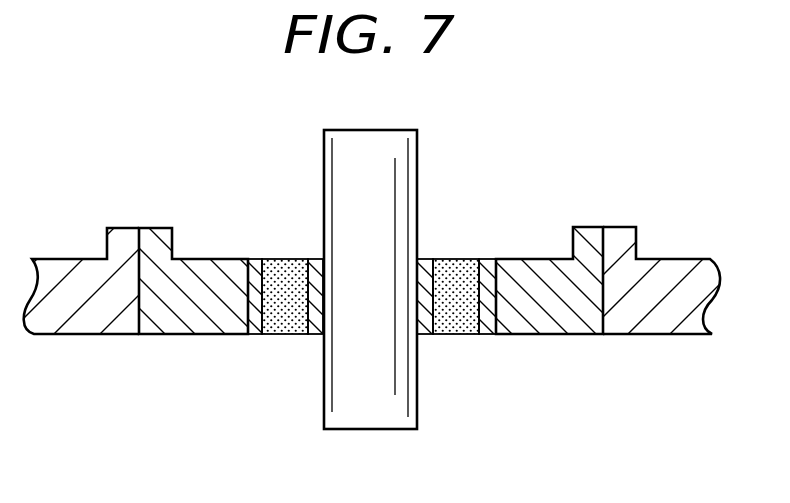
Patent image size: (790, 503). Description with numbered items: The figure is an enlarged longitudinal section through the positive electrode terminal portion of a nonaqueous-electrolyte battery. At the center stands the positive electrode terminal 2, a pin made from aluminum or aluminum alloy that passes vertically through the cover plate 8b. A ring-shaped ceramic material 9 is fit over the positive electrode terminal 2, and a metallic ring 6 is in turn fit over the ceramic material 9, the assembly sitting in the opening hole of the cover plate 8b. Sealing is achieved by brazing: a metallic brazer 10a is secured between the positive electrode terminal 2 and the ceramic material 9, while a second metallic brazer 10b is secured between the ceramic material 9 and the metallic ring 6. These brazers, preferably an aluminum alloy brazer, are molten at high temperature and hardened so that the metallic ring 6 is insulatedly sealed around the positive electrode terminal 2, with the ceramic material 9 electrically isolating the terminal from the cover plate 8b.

The positive electrode terminal 2 is at (377, 152).
The metallic ring 6 is at (215, 272).
The cover plate 8b is at (65, 272).
The ceramic material 9 is at (288, 266).
The metallic brazer 10a is at (315, 335).
The metallic brazer 10b is at (248, 335).